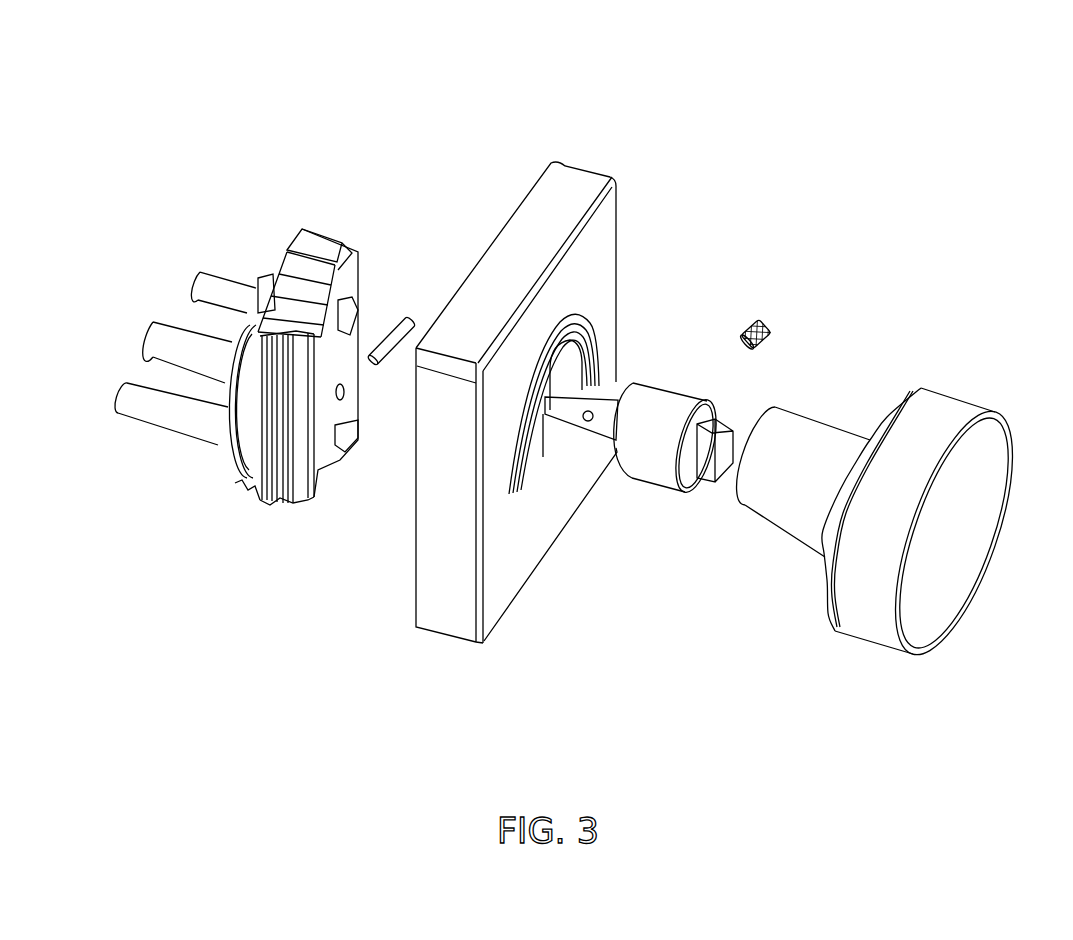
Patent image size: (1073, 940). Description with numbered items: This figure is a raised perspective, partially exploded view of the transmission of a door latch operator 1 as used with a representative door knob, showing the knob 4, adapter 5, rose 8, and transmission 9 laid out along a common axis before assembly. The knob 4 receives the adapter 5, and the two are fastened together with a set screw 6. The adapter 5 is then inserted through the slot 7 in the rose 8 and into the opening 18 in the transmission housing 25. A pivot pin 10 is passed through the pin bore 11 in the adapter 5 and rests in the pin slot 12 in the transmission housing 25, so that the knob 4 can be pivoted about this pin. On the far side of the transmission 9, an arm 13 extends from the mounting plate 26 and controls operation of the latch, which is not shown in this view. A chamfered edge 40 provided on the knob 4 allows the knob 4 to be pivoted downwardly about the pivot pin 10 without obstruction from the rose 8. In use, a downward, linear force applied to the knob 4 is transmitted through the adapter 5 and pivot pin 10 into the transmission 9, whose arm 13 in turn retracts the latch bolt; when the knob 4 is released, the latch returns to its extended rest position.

The door latch operator 1 is at (801, 113).
The knob 4 is at (948, 390).
The adapter 5 is at (657, 383).
The set screw 6 is at (758, 321).
The slot 7 is at (543, 457).
The rose 8 is at (583, 167).
The transmission 9 is at (322, 226).
The pivot pin 10 is at (405, 320).
The pin bore 11 is at (591, 420).
The pin slot 12 is at (358, 300).
The arm 13 is at (162, 347).
The opening 18 is at (336, 380).
The transmission housing 25 is at (303, 493).
The mounting plate 26 is at (270, 268).
The chamfered edge 40 is at (740, 490).